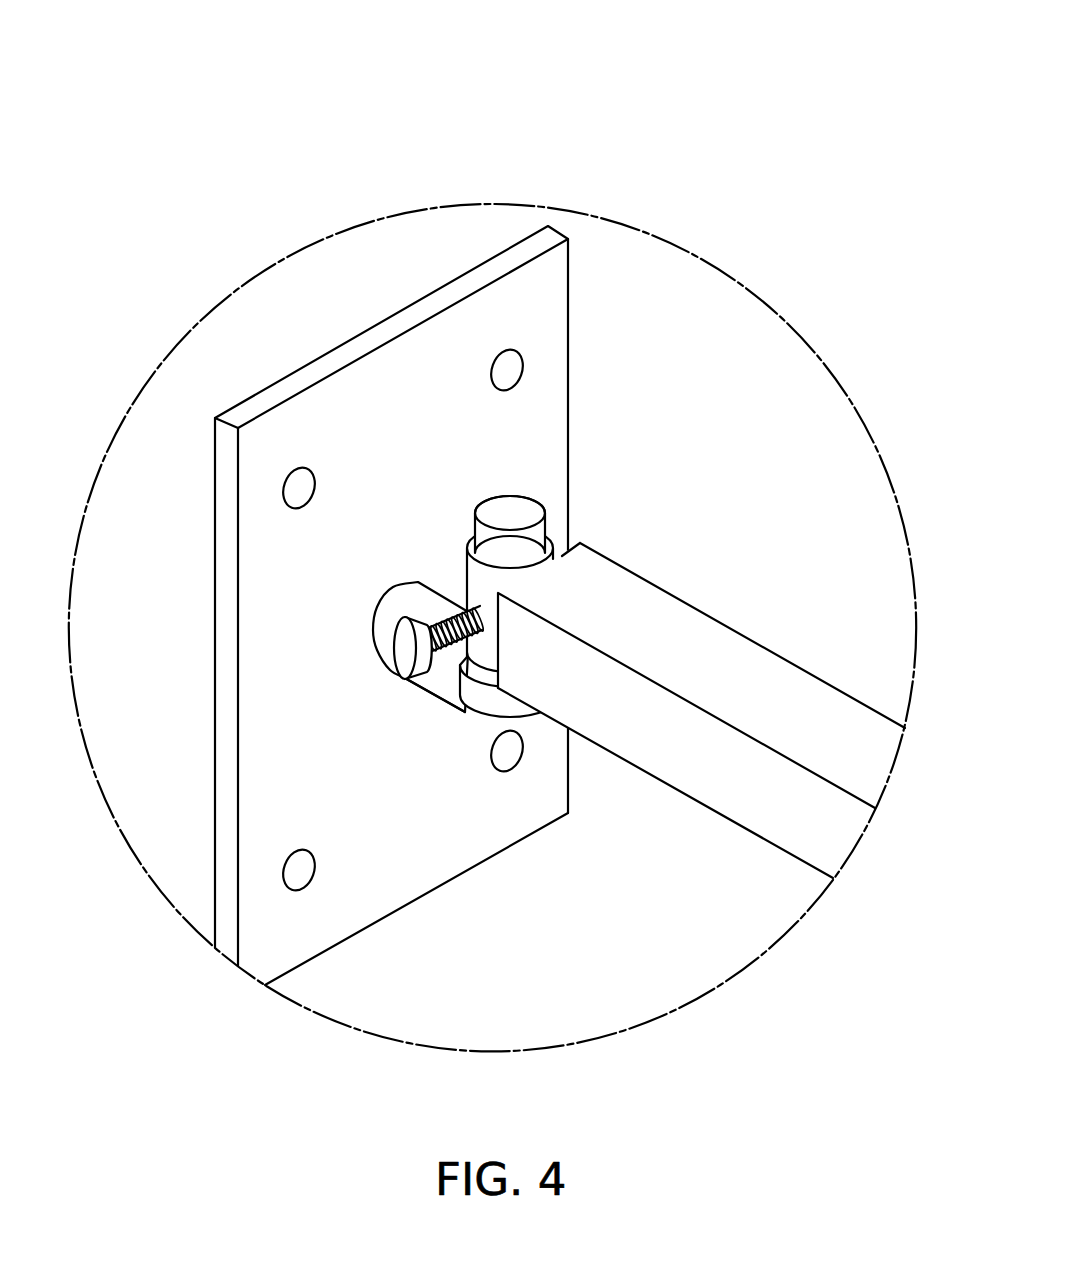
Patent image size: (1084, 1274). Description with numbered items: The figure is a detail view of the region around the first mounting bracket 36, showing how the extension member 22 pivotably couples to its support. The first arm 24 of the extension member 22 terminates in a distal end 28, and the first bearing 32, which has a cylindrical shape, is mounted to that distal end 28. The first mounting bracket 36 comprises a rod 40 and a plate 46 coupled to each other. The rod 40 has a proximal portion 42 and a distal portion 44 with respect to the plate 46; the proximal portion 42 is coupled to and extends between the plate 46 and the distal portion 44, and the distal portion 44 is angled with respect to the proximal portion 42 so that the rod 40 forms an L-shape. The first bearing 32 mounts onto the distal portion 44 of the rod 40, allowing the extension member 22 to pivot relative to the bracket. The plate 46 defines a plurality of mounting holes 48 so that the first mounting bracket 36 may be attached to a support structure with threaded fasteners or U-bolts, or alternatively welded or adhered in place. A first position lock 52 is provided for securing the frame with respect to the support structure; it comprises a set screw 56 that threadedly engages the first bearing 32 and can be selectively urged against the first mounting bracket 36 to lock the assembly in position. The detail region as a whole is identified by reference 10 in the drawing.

The hinge assembly 10 is at (593, 250).
The extension member 22 is at (797, 610).
The first arm 24 is at (803, 702).
The distal end 28 is at (570, 600).
The first bearing 32 is at (478, 583).
The first mounting bracket 36 is at (500, 897).
The rod 40 is at (482, 698).
The proximal portion 42 is at (447, 683).
The distal portion 44 is at (513, 513).
The plate 46 is at (395, 360).
The mounting holes 48 is at (322, 505).
The first position lock 52 is at (395, 706).
The set screw 56 is at (420, 650).